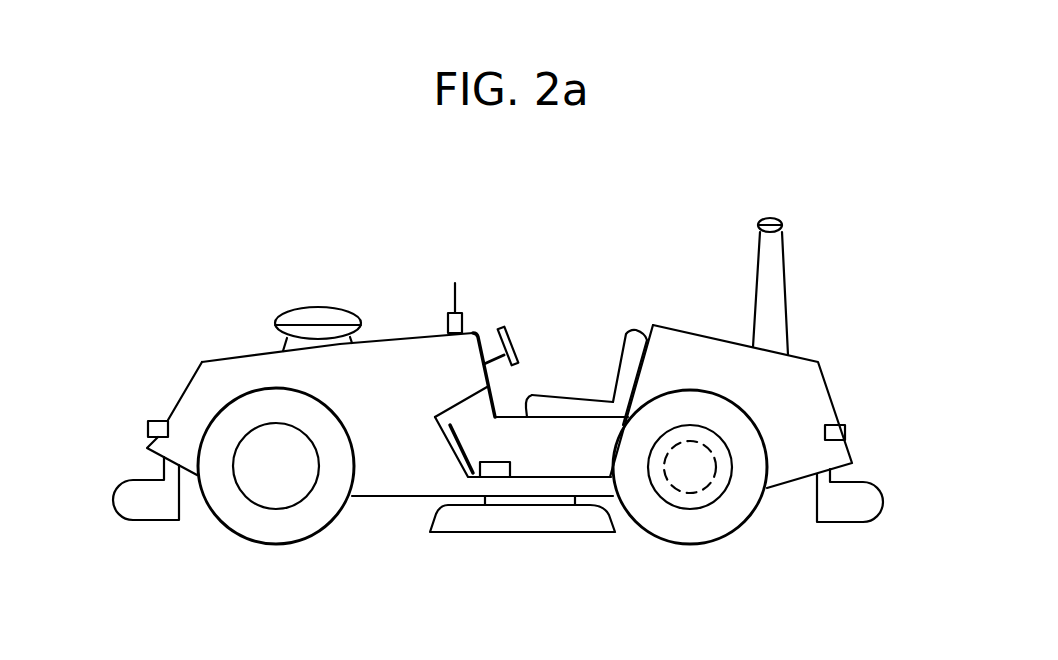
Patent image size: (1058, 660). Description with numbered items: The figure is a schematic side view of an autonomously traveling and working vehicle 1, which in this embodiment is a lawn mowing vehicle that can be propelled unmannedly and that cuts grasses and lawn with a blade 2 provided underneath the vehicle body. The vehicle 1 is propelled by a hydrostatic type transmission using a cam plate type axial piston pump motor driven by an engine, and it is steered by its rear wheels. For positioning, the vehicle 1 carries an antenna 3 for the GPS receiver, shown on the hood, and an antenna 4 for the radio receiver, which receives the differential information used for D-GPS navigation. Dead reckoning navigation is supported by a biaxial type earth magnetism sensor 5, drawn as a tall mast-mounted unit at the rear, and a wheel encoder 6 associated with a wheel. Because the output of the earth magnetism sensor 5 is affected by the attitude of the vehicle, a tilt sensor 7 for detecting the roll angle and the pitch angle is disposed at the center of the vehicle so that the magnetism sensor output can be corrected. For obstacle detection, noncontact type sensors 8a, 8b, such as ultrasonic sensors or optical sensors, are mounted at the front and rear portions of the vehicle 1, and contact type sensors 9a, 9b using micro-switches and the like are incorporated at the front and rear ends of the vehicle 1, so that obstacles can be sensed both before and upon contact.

The autonomously traveling and working vehicle 1 is at (551, 243).
The blade 2 is at (563, 533).
The antenna for the GPS receiver 3 is at (326, 307).
The antenna for the radio receiver 4 is at (467, 323).
The biaxial type earth magnetism sensor 5 is at (783, 225).
The wheel encoder 6 is at (687, 490).
The tilt sensor 7 is at (490, 477).
The noncontact type sensor 8a is at (148, 430).
The noncontact type sensor 8b is at (845, 430).
The contact type sensor 9a is at (120, 502).
The contact type sensor 9b is at (875, 502).